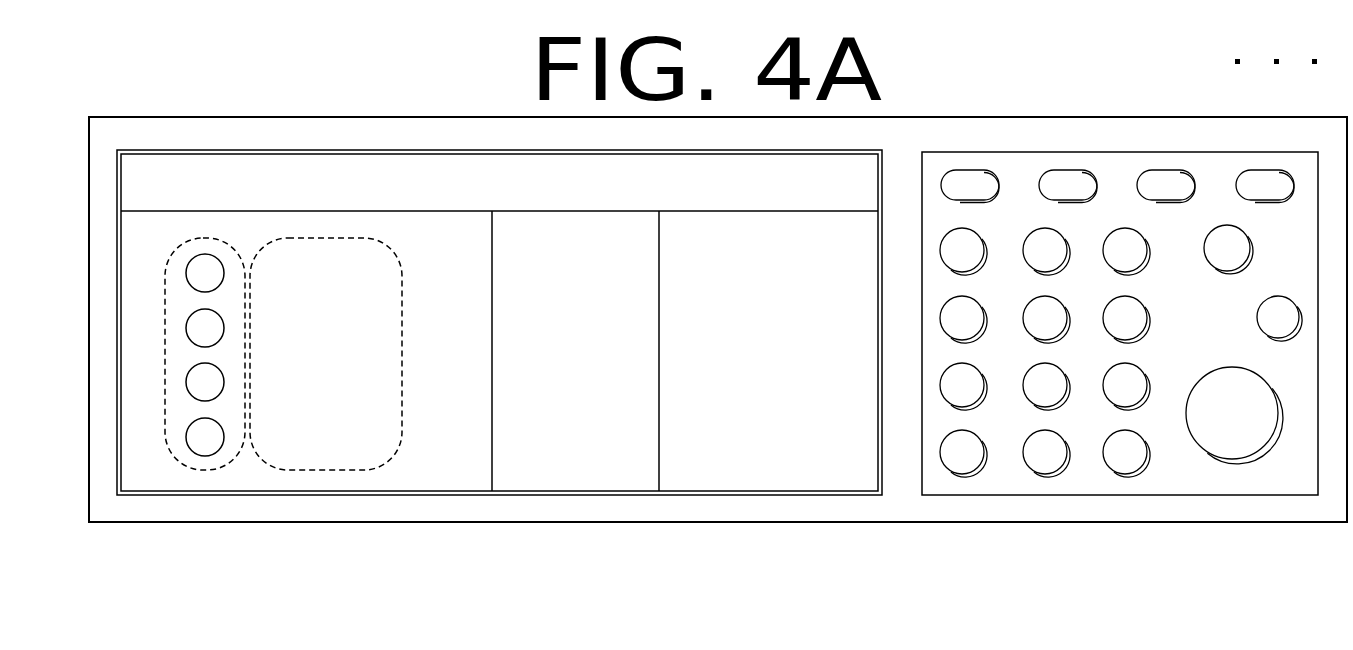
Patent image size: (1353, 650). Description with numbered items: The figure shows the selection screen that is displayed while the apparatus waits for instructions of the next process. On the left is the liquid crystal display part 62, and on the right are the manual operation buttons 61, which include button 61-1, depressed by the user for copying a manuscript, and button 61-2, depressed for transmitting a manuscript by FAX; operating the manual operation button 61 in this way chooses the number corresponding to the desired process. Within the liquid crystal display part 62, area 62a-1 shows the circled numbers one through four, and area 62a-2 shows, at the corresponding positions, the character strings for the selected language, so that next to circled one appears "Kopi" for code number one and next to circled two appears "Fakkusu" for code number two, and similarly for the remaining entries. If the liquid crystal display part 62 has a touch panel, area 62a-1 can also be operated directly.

The manual operation button 61 is at (1082, 495).
The button 61-1 is at (967, 228).
The button 61-2 is at (1047, 228).
The liquid crystal display part 62 is at (575, 495).
The area 62a-1 is at (205, 238).
The area 62a-2 is at (318, 238).